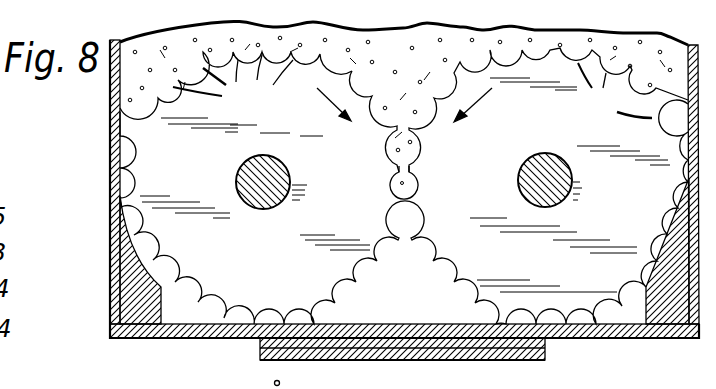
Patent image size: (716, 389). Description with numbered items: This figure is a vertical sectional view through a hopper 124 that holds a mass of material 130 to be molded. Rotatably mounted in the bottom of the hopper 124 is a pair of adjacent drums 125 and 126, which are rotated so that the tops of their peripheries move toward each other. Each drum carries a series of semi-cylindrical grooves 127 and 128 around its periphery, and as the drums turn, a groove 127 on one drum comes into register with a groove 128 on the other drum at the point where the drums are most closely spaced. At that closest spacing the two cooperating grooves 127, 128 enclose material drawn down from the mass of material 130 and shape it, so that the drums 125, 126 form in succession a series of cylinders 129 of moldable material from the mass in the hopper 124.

The hopper 124 is at (118, 100).
The drum 125 is at (328, 173).
The drum 126 is at (530, 140).
The semi-cylindrical groove 127 is at (418, 184).
The semi-cylindrical groove 128 is at (392, 184).
The cylinder of moldable material 129 is at (411, 172).
The mass of material 130 is at (408, 66).